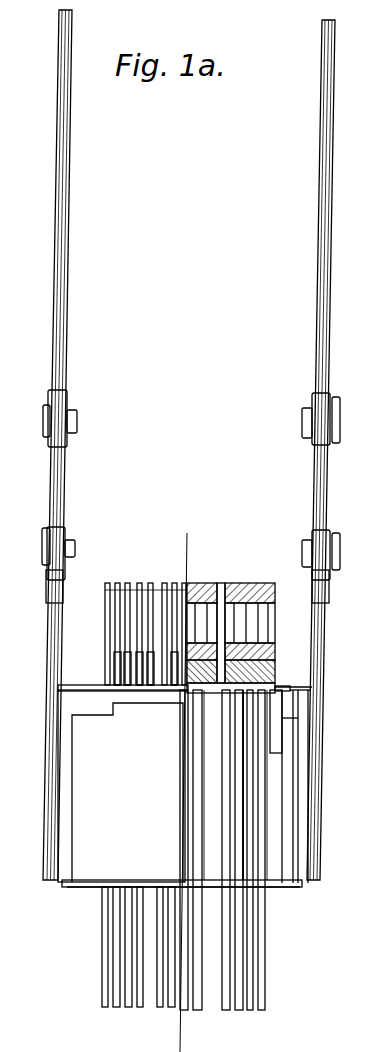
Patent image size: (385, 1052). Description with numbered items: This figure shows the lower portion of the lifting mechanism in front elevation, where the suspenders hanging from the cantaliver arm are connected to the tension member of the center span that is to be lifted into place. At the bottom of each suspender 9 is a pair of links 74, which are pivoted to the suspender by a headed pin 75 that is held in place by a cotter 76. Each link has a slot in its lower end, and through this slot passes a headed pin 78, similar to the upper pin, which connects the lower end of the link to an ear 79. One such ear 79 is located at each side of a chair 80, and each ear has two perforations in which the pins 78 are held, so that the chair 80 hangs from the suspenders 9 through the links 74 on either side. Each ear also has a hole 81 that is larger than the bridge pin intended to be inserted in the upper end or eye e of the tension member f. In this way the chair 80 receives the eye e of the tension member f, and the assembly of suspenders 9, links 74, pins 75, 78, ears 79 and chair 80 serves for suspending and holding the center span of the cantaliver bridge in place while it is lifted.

The suspender 9 is at (53, 300).
The links 74 is at (49, 488).
The headed pin 75 is at (43, 417).
The cotter 76 is at (77, 420).
The headed pin 78 is at (42, 547).
The ear 79 is at (322, 678).
The chair 80 is at (185, 786).
The hole 81 is at (48, 620).
The eye e is at (200, 584).
The tension member f is at (227, 1011).